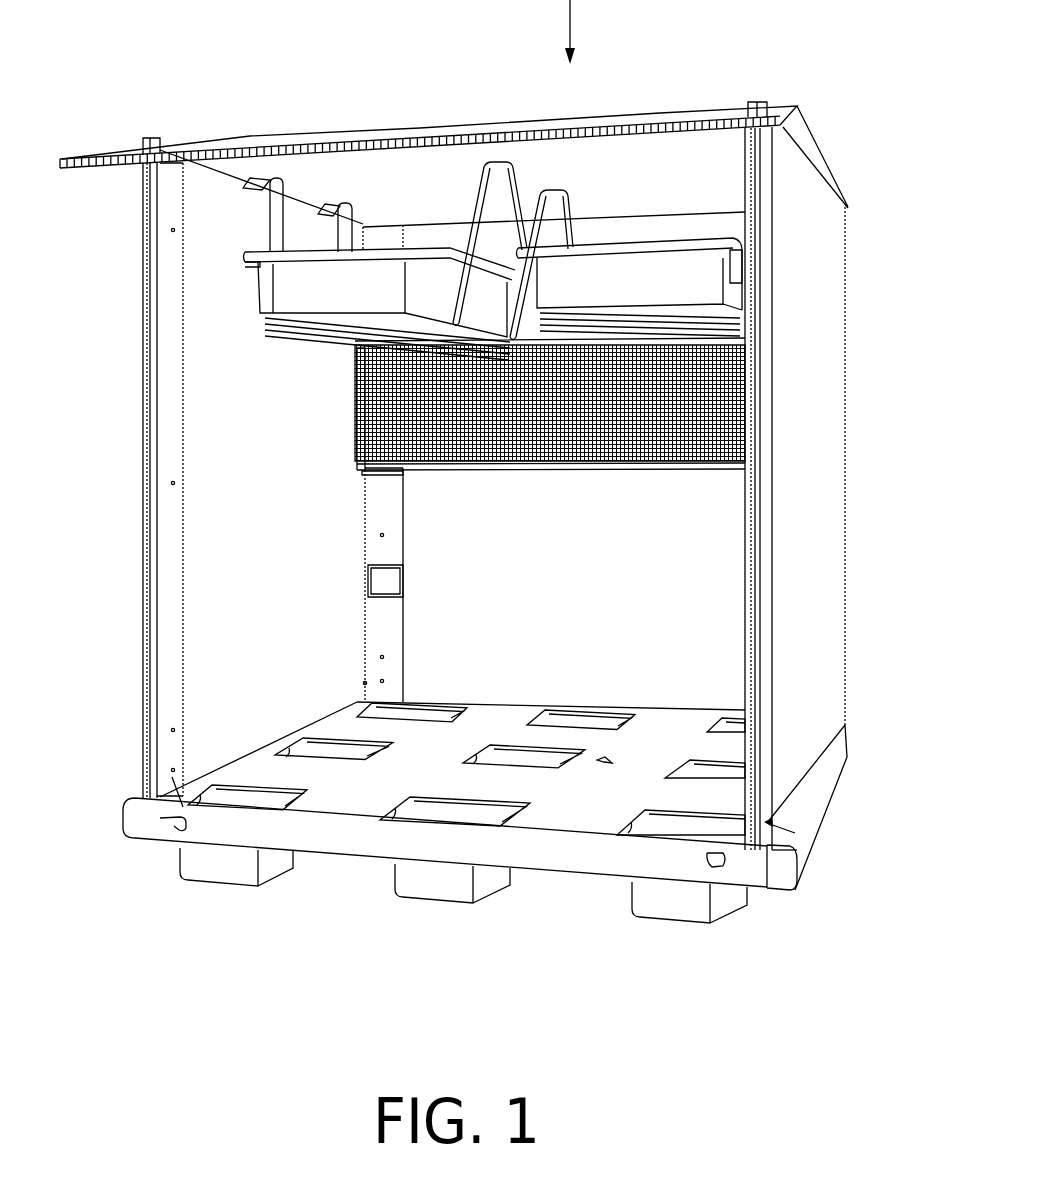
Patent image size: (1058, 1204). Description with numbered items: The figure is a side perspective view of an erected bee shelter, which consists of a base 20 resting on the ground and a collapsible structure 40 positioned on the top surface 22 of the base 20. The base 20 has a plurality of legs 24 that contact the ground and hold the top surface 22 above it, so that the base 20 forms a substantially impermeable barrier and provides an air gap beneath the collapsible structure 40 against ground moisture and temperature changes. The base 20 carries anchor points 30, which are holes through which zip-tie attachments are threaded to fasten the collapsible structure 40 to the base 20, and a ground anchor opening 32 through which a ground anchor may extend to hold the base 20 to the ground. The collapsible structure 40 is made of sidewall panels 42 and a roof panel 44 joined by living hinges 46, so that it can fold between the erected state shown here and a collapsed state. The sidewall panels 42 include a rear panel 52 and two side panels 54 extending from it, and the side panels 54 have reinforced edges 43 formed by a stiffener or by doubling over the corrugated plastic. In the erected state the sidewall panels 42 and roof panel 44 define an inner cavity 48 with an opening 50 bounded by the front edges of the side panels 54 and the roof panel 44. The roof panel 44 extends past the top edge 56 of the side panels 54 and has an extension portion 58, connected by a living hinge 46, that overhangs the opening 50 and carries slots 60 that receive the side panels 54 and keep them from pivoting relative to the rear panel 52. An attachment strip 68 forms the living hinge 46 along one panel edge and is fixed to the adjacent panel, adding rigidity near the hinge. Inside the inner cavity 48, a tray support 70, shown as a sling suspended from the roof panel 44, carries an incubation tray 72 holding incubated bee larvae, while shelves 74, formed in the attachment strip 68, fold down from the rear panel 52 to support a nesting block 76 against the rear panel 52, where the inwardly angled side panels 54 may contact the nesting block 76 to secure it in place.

The base 20 is at (577, 848).
The top surface 22 is at (373, 778).
The legs 24 is at (423, 873).
The anchor points 30 is at (175, 827).
The ground anchor opening 32 is at (597, 763).
The collapsible structure 40 is at (803, 315).
The sidewall panels 42 is at (268, 413).
The reinforced edges 43 is at (145, 290).
The roof panel 44 is at (612, 193).
The living hinges 46 is at (437, 215).
The inner cavity 48 is at (591, 502).
The opening 50 is at (800, 668).
The rear panel 52 is at (634, 544).
The side panels 54 is at (257, 583).
The top edge 56 is at (789, 167).
The extension portion 58 is at (292, 158).
The slots 60 is at (170, 150).
The attachment strip 68 is at (400, 528).
The tray support 70 is at (521, 212).
The incubation tray 72 is at (293, 294).
The shelves 74 is at (403, 472).
The nesting block 76 is at (625, 445).